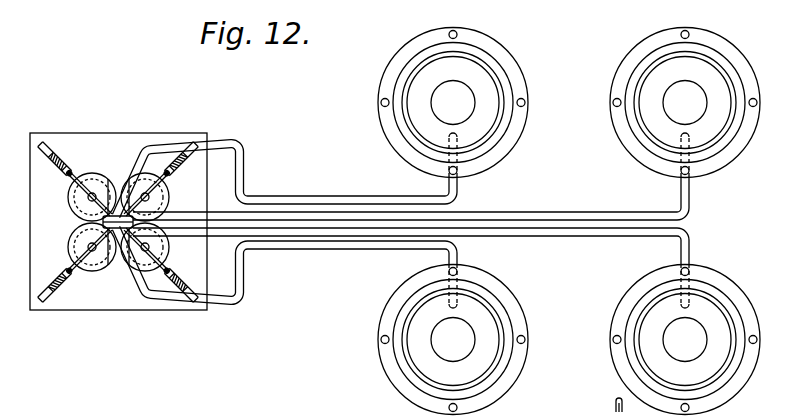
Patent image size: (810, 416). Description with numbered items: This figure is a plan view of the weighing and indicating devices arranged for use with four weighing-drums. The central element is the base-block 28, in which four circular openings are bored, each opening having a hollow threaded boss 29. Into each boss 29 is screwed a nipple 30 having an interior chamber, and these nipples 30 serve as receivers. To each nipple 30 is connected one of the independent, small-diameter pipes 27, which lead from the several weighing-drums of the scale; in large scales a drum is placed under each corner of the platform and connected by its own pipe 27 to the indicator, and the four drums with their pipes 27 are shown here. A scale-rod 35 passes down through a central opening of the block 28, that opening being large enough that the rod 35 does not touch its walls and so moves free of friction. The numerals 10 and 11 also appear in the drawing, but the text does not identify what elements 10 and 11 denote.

The valve rod 10 is at (96, 177).
The tube 11 is at (71, 172).
The pipe 27 is at (331, 196).
The base-block 28 is at (117, 133).
The hollow threaded boss 29 is at (68, 191).
The nipple 30 is at (74, 204).
The scale-rod 35 is at (128, 200).